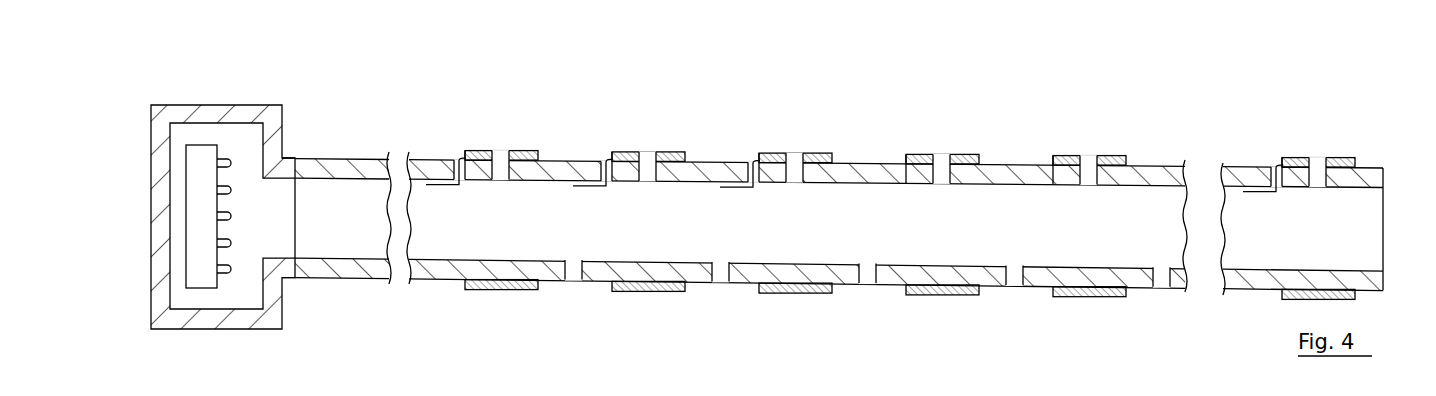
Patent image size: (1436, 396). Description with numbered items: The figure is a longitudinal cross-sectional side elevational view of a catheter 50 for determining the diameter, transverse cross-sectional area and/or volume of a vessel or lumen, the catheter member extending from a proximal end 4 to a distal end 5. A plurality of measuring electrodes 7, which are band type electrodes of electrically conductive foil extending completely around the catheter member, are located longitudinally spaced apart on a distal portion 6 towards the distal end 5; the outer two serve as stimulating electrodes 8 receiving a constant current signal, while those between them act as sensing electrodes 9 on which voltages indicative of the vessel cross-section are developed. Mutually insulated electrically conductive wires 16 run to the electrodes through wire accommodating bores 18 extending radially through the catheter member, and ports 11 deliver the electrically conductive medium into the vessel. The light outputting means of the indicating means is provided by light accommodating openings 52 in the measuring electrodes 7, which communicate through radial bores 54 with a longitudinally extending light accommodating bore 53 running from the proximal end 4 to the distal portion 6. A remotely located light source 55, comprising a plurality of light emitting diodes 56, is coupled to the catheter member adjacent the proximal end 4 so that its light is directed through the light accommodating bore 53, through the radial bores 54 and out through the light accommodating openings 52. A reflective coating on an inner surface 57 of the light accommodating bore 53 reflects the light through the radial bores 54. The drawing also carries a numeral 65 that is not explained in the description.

The proximal end 4 is at (318, 165).
The distal end 5 is at (1386, 178).
The distal portion 6 is at (920, 336).
The measuring electrodes 7 is at (528, 151).
The stimulating electrodes 8 is at (490, 160).
The sensing electrodes 9 is at (637, 161).
The ports 11 is at (575, 276).
The electrically conductive wires 16 is at (442, 176).
The wire accommodating bores 18 is at (454, 167).
The catheter 50 is at (783, 333).
The light accommodating openings 52 is at (512, 160).
The light accommodating bore 53 is at (429, 255).
The radial bores 54 is at (500, 168).
The light source 55 is at (203, 278).
The light emitting diodes 56 is at (237, 160).
The inner surface 57 is at (367, 182).
The connector 65 is at (1010, 395).